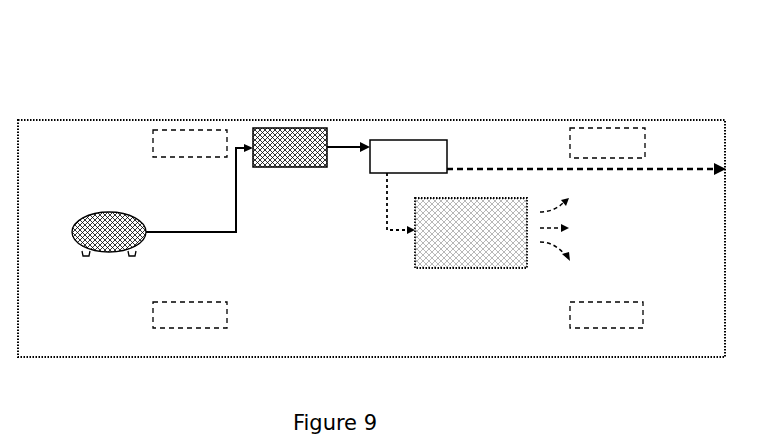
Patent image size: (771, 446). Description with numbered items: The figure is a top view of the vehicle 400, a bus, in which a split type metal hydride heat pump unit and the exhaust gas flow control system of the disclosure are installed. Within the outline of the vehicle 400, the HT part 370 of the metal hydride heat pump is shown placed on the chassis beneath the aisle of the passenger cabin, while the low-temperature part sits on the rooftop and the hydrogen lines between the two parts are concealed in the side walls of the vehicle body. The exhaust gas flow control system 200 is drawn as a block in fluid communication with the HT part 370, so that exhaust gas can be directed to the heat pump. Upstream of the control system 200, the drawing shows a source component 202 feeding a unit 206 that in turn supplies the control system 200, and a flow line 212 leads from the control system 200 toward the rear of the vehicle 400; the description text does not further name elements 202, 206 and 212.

The vehicle 400 is at (113, 111).
The gas supply tank 202 is at (99, 262).
The filter / regulator unit 206 is at (282, 120).
The exhaust gas flow control system 200 is at (403, 132).
The HT part of the metal hydride heat pump 370 is at (487, 190).
The output line 212 is at (697, 160).